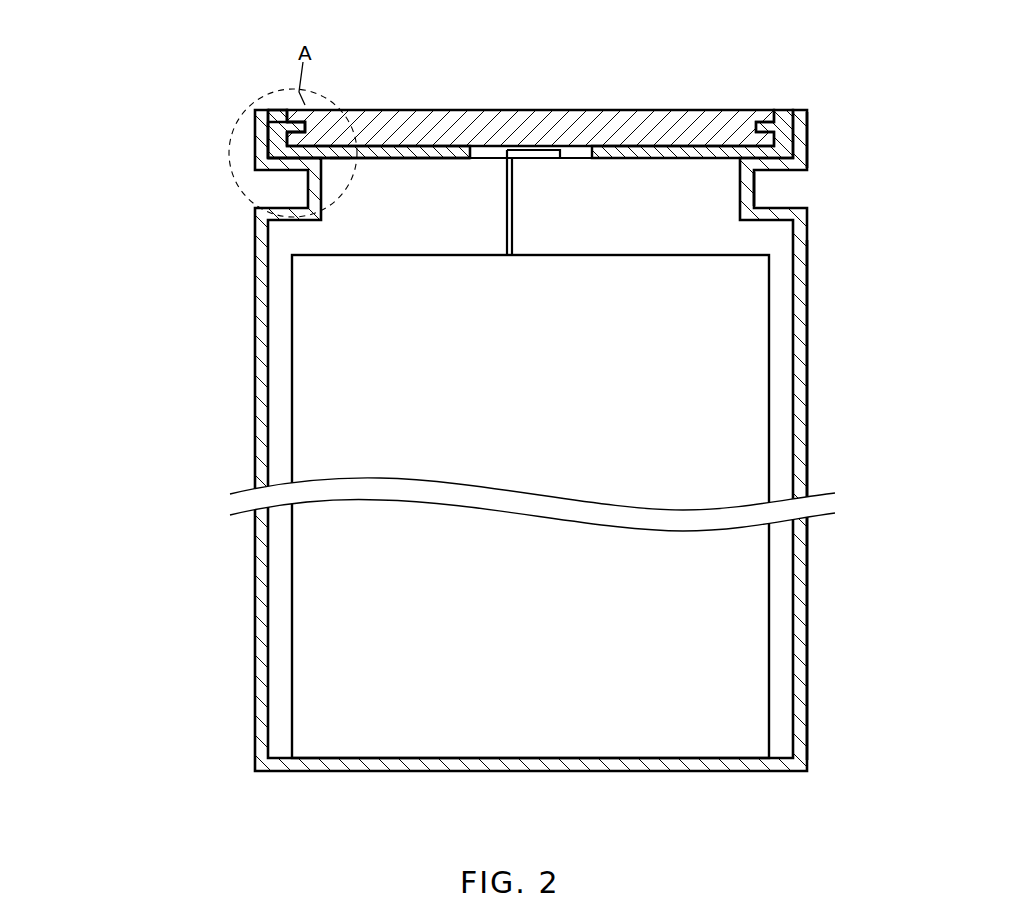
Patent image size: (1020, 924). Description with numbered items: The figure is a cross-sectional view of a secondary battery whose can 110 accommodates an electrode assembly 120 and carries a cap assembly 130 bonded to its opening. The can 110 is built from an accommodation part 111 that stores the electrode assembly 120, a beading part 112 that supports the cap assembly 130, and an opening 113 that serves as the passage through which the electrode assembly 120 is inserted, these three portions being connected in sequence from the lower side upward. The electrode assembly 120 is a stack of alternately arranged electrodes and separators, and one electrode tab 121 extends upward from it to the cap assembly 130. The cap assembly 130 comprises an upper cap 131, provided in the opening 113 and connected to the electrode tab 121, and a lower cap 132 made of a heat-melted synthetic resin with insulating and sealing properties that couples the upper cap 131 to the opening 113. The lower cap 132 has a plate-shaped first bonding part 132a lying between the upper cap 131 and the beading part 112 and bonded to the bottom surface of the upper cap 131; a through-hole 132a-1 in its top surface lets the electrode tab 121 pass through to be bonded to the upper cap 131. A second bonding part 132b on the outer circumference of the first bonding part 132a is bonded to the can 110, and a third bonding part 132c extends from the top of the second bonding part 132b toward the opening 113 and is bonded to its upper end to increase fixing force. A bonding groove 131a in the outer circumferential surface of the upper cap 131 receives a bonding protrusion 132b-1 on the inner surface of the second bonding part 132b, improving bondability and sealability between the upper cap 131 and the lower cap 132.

The can 110 is at (605, 440).
The accommodation part 111 is at (788, 262).
The beading part 112 is at (745, 185).
The opening 113 is at (852, 140).
The electrode assembly 120 is at (776, 380).
The electrode tab 121 is at (537, 147).
The cap assembly 130 is at (412, 167).
The upper cap 131 is at (433, 73).
The bonding groove 131a is at (282, 121).
The lower cap 132 is at (442, 184).
The first bonding part 132a is at (293, 160).
The through-hole 132a-1 is at (480, 146).
The second bonding part 132b is at (275, 132).
The bonding protrusion 132b-1 is at (340, 168).
The third bonding part 132c is at (276, 114).